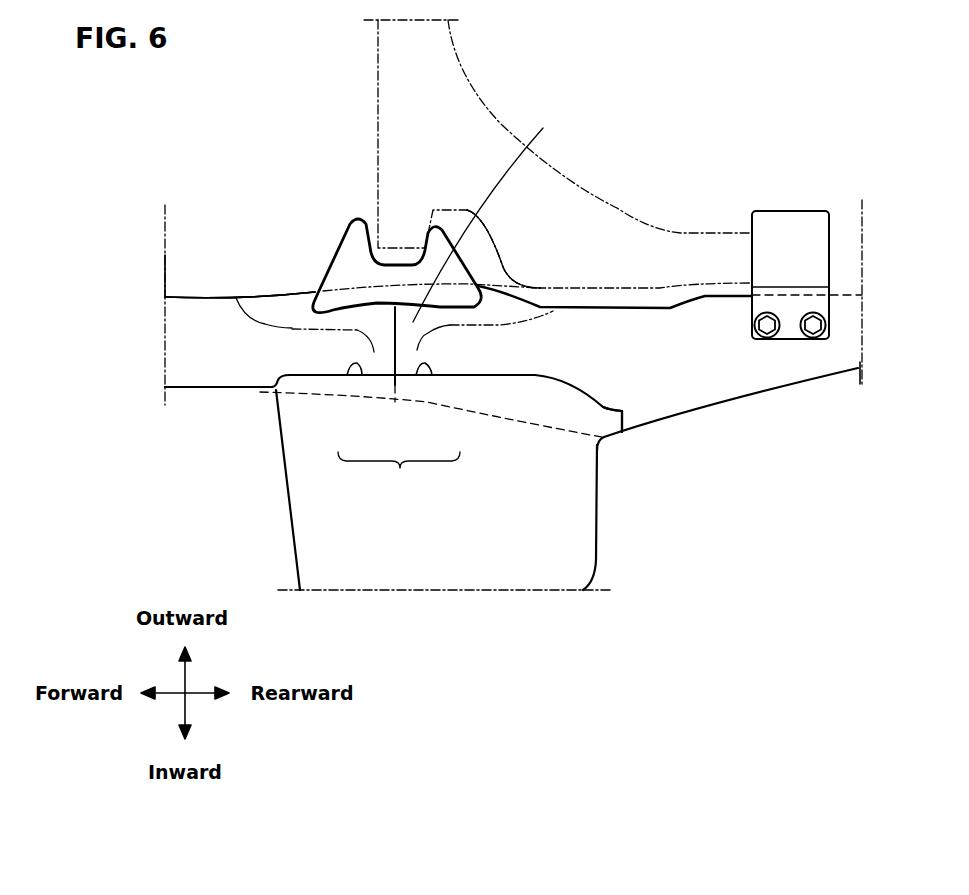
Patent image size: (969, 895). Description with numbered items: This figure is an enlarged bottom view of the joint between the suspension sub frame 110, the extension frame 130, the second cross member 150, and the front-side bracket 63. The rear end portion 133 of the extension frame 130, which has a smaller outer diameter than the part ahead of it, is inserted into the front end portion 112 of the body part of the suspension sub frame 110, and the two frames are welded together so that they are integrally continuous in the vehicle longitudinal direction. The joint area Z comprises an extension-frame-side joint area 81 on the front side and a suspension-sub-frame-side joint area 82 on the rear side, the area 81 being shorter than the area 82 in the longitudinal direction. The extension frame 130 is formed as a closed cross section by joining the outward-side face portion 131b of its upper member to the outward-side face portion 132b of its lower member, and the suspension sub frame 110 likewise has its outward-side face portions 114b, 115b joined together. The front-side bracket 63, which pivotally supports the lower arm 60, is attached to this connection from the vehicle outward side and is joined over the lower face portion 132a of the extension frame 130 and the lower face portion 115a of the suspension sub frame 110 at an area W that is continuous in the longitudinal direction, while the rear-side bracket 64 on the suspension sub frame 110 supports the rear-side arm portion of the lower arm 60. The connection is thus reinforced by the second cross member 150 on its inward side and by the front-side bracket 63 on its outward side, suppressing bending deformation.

The lower arm 60 is at (477, 88).
The front-side bracket 63 is at (337, 254).
The rear-side bracket 64 is at (808, 211).
The area W is at (492, 219).
The suspension sub frame 110 is at (708, 425).
The front end portion 112 is at (563, 310).
The lower face portion 115a is at (617, 367).
The outward-side face portion 115b is at (500, 284).
The outward-side face portion 114b is at (581, 218).
The extension frame 130 is at (185, 398).
The lower face portion 132a is at (210, 360).
The outward-side face portion 132b is at (290, 297).
The outward-side face portion 131b is at (240, 234).
The rear end portion 133 is at (237, 298).
The second cross member 150 is at (300, 533).
The extension-frame-side joint area 81 is at (362, 375).
The suspension-sub-frame-side joint area 82 is at (431, 375).
The joint area Z is at (399, 477).